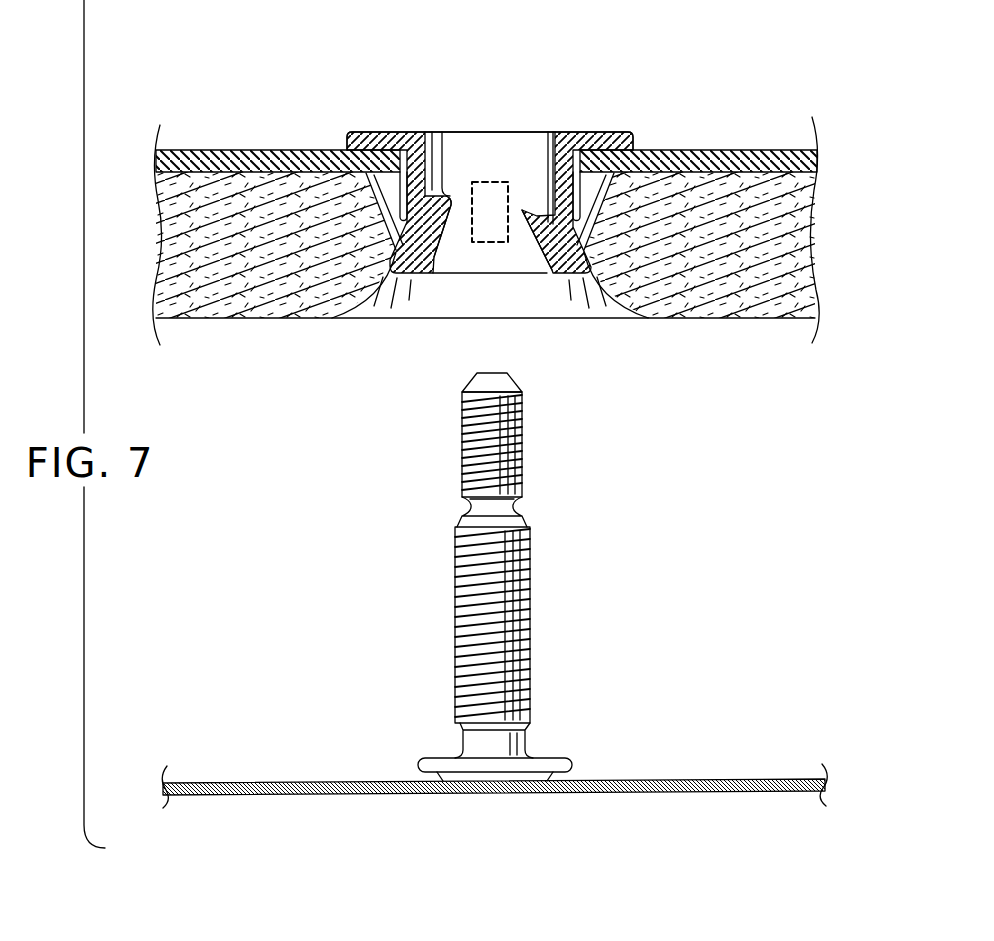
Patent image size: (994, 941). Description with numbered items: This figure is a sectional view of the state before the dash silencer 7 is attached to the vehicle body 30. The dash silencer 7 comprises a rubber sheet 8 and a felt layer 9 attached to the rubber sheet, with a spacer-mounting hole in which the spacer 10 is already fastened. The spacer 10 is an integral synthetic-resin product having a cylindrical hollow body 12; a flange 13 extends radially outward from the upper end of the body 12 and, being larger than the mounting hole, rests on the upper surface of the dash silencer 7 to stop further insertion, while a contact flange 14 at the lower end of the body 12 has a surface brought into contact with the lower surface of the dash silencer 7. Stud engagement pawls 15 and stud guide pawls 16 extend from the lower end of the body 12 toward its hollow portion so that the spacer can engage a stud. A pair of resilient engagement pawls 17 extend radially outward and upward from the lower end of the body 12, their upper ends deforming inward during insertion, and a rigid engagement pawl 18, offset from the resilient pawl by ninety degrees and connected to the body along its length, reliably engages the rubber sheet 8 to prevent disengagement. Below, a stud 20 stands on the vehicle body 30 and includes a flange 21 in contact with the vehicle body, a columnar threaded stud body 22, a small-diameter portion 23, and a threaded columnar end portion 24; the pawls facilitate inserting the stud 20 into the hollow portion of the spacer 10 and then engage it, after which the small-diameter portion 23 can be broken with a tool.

The dash silencer 7 is at (828, 205).
The rubber sheet 8 is at (683, 150).
The felt layer 9 is at (808, 250).
The spacer 10 is at (402, 108).
The body 12 is at (553, 188).
The flange 13 is at (613, 140).
The contact flange 14 is at (582, 267).
The stud engagement pawls 15 is at (527, 213).
The stud guide pawls 16 is at (450, 210).
The resilient engagement pawls 17 is at (373, 207).
The rigid engagement pawl 18 is at (495, 208).
The stud 20 is at (541, 465).
The flange 21 is at (560, 757).
The stud body 22 is at (472, 614).
The small-diameter portion 23 is at (510, 507).
The end portion 24 is at (478, 443).
The vehicle body 30 is at (735, 782).